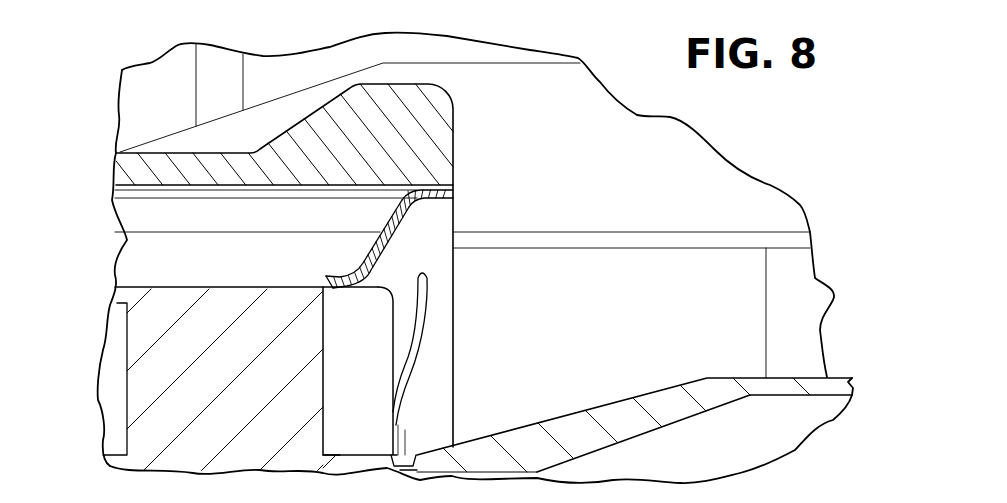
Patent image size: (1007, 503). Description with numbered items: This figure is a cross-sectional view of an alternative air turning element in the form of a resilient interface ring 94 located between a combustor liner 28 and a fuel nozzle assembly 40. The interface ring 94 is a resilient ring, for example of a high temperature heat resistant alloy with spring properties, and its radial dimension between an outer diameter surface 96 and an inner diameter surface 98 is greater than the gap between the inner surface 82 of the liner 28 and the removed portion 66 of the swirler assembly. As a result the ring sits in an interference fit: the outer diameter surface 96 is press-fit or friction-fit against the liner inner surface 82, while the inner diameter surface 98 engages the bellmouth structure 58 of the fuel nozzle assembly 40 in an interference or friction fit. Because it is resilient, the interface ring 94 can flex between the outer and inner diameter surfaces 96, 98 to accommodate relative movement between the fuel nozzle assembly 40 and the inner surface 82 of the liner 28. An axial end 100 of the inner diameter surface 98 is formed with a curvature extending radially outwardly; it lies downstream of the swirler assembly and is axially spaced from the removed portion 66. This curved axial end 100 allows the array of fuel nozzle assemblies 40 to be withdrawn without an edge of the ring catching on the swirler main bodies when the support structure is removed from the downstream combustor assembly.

The combustor liner 28 is at (213, 165).
The fuel nozzle assembly 40 is at (88, 340).
The bellmouth structure 58 is at (380, 290).
The removed portion 66 is at (358, 292).
The inner surface of the liner 82 is at (237, 190).
The interface ring 94 is at (393, 235).
The outer diameter surface 96 is at (433, 185).
The inner diameter surface 98 is at (322, 310).
The axial end 100 is at (343, 277).